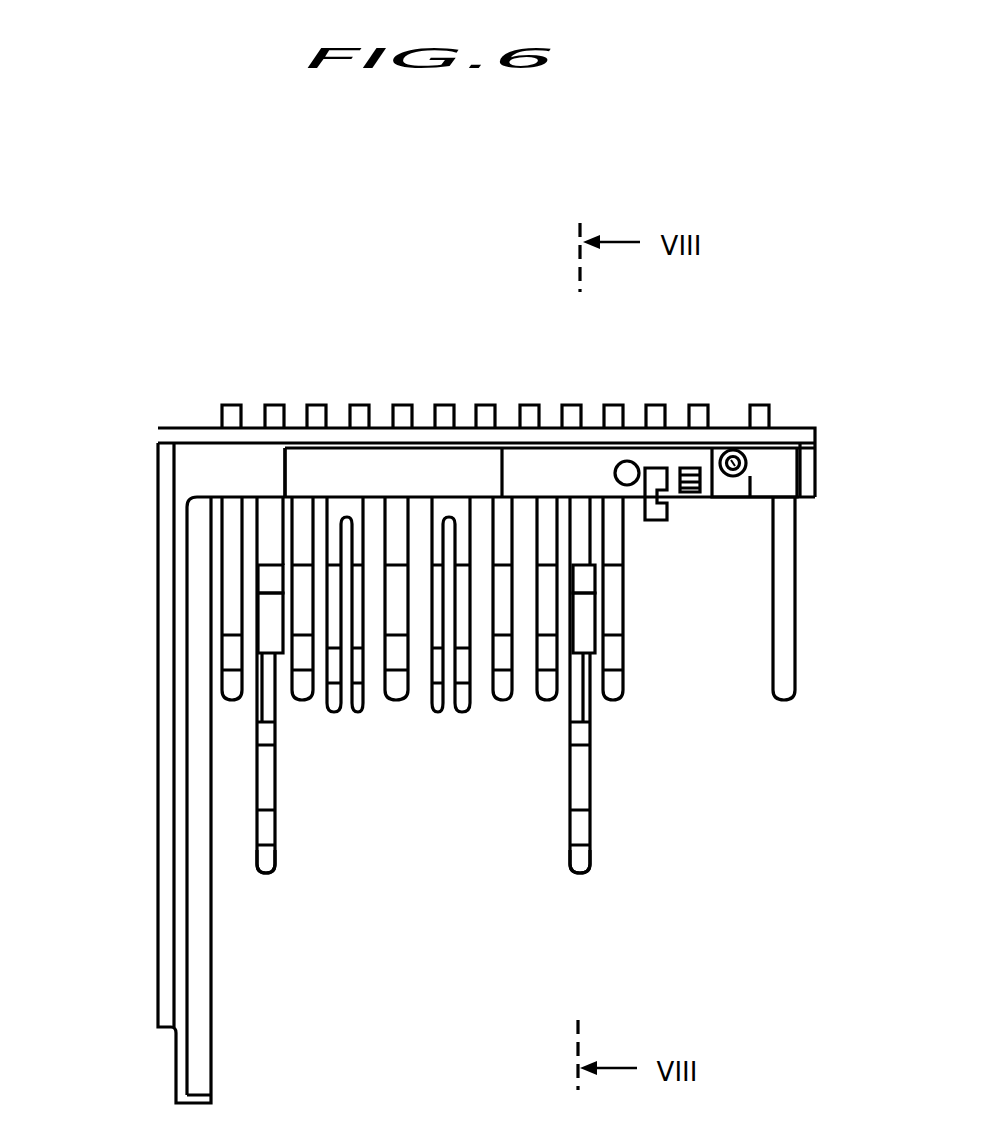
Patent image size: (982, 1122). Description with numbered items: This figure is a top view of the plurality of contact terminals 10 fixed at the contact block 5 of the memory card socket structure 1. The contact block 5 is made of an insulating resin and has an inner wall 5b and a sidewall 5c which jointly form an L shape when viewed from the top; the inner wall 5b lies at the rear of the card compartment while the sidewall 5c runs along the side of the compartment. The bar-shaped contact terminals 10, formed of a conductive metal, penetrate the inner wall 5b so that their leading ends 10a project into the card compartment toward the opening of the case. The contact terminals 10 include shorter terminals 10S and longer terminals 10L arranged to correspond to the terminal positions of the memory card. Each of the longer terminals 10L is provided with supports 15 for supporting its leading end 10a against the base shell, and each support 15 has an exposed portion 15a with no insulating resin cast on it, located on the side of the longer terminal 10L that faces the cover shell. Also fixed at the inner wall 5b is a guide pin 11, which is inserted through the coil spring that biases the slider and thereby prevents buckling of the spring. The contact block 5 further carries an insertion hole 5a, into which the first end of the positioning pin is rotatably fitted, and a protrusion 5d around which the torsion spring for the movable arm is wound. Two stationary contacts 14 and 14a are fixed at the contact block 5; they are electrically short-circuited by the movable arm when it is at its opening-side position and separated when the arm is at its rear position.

The memory card socket structure 1 is at (781, 290).
The contact block 5 is at (801, 428).
The insertion hole 5a is at (733, 449).
The inner wall 5b is at (252, 472).
The sidewall 5c is at (178, 871).
The protrusion 5d is at (623, 460).
The contact terminals 10 is at (658, 963).
The leading ends 10a is at (280, 868).
The longer terminals 10L is at (270, 745).
The shorter terminals 10S is at (230, 606).
The guide pin 11 is at (788, 653).
The stationary contact 14 is at (698, 405).
The stationary contact 14a is at (655, 405).
The supports 15 is at (260, 705).
The exposed portion 15a is at (266, 578).